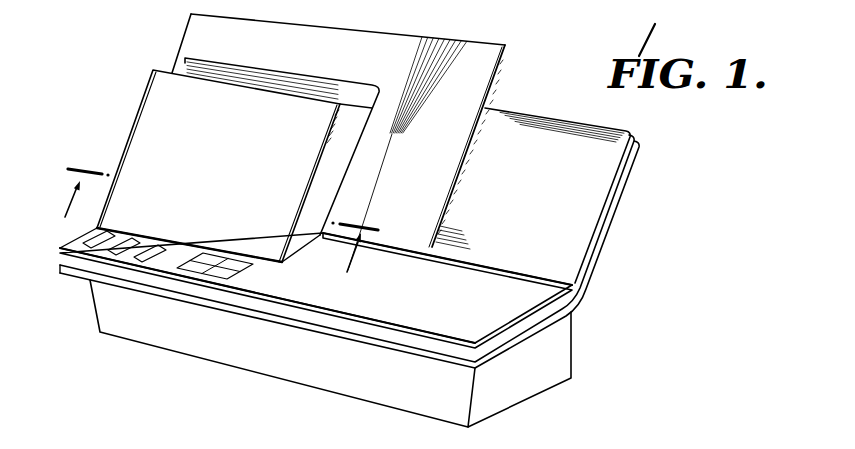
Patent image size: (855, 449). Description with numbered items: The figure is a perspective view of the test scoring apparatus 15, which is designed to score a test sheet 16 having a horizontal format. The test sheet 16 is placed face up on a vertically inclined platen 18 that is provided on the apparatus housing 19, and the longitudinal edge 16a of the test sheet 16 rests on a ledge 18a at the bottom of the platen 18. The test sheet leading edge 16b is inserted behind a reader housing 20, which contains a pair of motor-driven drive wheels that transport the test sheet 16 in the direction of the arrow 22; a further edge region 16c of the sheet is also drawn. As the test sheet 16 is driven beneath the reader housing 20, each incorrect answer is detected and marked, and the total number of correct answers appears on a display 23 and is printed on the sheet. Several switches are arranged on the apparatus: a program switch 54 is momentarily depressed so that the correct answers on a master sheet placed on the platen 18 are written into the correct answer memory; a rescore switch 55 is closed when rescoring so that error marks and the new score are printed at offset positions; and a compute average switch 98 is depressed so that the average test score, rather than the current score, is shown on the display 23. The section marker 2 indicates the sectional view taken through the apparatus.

The test scoring apparatus 15 is at (226, 390).
The test sheet 16 is at (511, 37).
The longitudinal edge 16a is at (396, 243).
The leading edge 16b is at (182, 44).
The side edge portion of panel 16c is at (491, 90).
The platen 18 is at (553, 147).
The ledge 18a is at (550, 271).
The apparatus housing 19 is at (505, 310).
The reader housing 20 is at (148, 133).
The arrow 22 is at (366, 163).
The display 23 is at (207, 265).
The program switch 54 is at (97, 243).
The rescore switch 55 is at (131, 243).
The compute average switch 98 is at (158, 250).
The section line 2- 2 is at (210, 230).